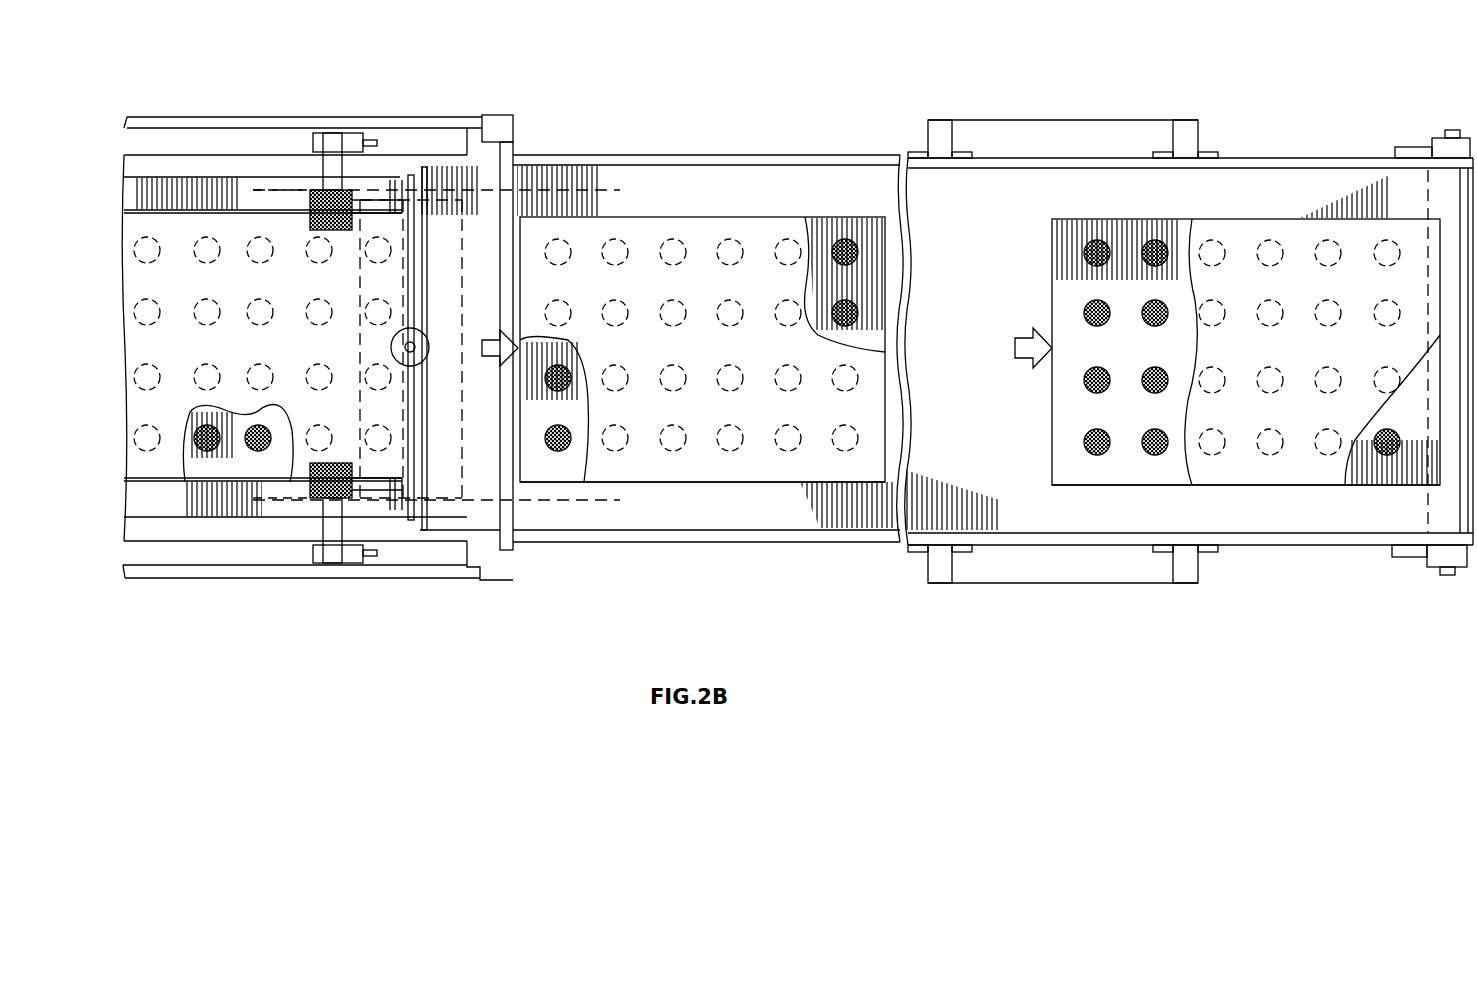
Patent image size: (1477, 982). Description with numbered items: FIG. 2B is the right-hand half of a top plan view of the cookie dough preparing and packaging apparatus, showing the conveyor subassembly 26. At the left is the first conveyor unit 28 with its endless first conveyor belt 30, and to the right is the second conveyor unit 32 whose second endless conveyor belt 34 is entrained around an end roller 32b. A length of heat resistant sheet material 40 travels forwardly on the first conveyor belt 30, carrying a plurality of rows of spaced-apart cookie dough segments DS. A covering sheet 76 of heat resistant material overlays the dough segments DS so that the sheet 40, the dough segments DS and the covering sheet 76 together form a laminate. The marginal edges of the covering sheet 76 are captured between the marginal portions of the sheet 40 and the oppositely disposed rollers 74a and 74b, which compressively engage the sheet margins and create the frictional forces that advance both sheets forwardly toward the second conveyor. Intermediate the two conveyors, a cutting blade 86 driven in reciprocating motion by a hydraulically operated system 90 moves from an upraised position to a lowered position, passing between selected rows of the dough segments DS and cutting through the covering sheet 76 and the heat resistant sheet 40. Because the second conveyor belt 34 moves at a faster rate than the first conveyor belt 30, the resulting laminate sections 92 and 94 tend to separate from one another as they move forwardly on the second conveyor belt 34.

The conveyor subassembly 26 is at (497, 113).
The first conveyor unit 28 is at (215, 522).
The first conveyor belt 30 is at (249, 186).
The second conveyor unit 32 is at (582, 153).
The end roller 32b is at (1445, 158).
The second conveyor belt 34 is at (443, 518).
The heat resistant sheet material 40 is at (215, 458).
The roller 74a is at (315, 487).
The roller 74b is at (310, 217).
The covering sheet 76 is at (185, 218).
The cutting blade 86 is at (413, 279).
The hydraulically operated system 90 is at (421, 336).
The laminate section 92 is at (740, 491).
The laminate section 94 is at (1295, 488).
The dough segments DS is at (200, 432).